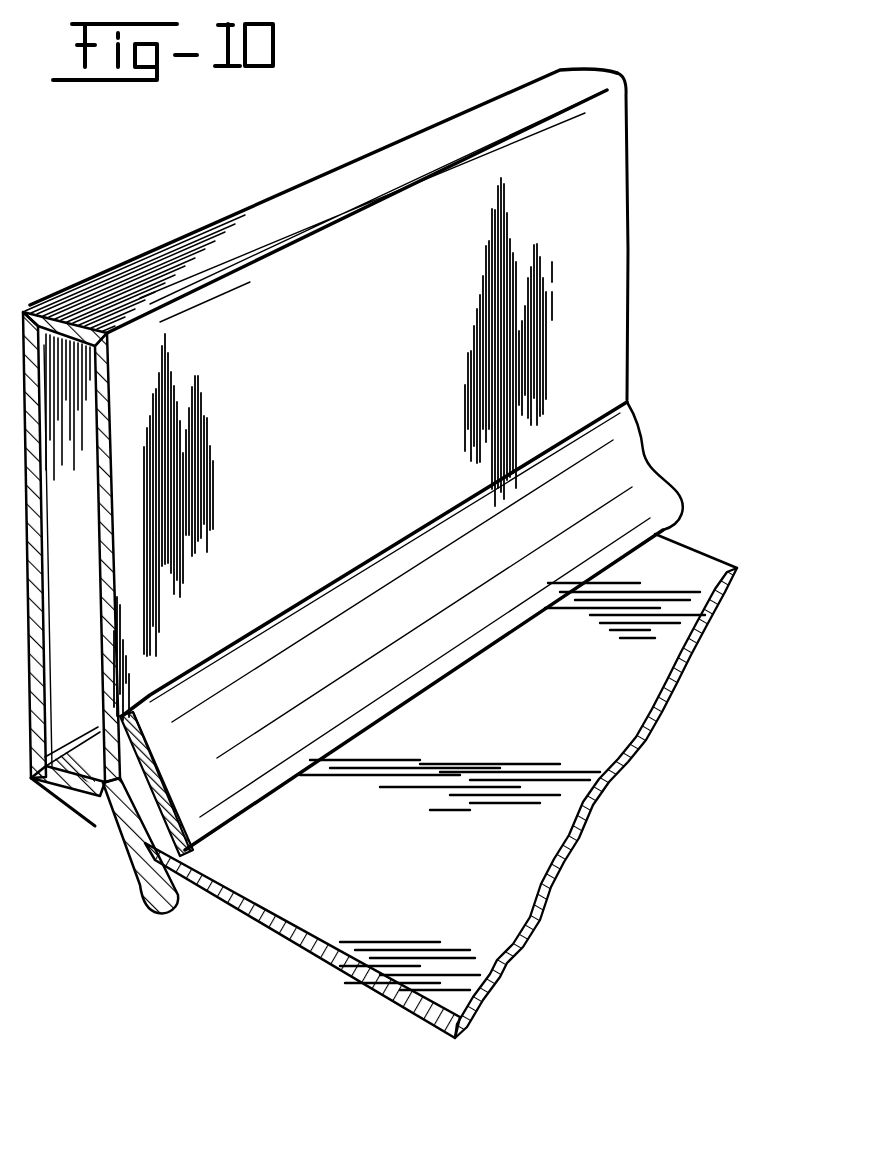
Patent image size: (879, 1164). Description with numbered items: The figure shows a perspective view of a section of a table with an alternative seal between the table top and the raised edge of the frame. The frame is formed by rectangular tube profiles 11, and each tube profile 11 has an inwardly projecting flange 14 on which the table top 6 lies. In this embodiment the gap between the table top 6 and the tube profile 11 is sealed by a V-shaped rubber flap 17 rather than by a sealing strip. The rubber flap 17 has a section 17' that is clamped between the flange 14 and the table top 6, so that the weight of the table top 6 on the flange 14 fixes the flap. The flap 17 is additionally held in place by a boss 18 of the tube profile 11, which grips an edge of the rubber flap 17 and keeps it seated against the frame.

The table top 6 is at (530, 853).
The rectangular tube profile 11 is at (157, 265).
The flange 14 is at (185, 913).
The rubber flap 17 is at (417, 625).
The section 17' is at (140, 865).
The boss 18 is at (103, 782).